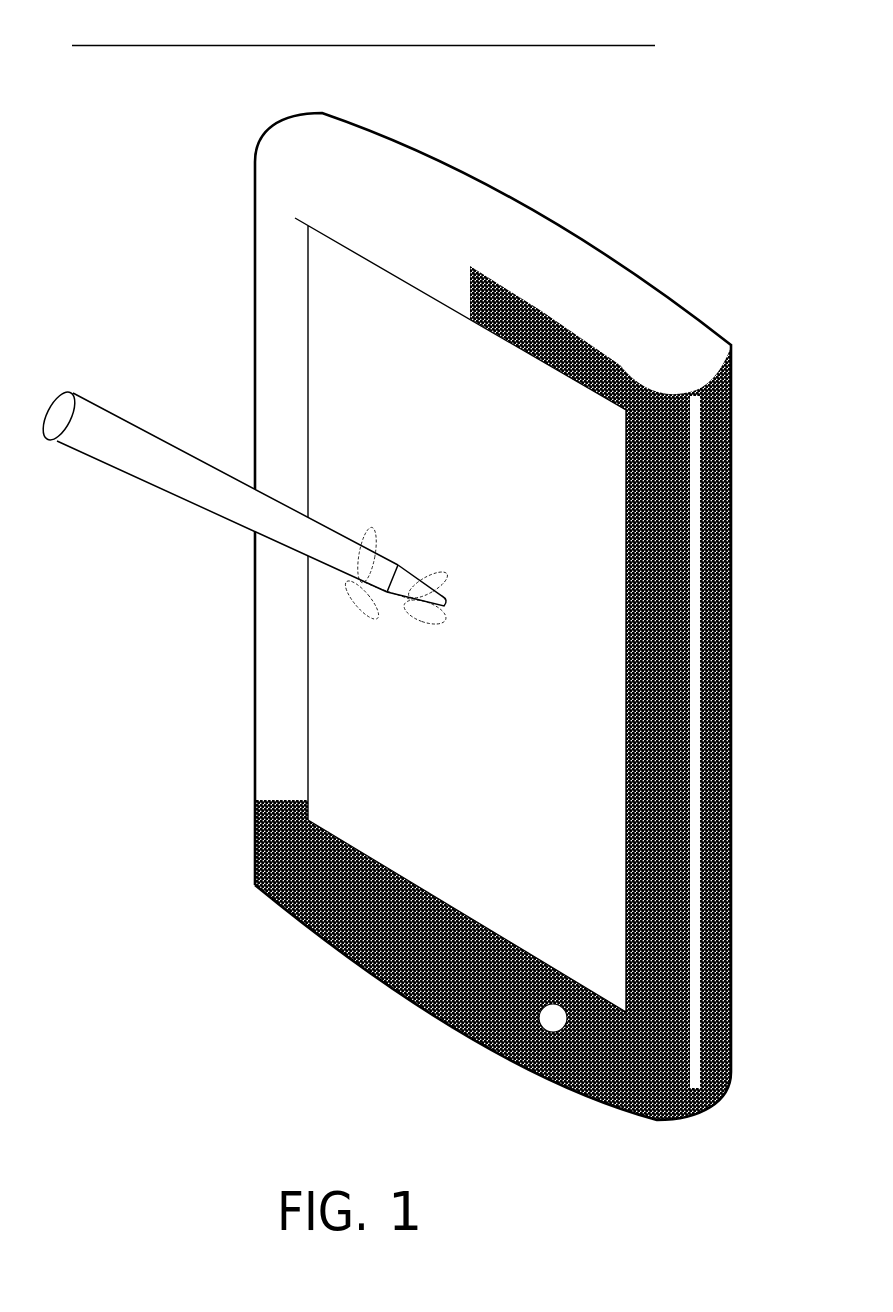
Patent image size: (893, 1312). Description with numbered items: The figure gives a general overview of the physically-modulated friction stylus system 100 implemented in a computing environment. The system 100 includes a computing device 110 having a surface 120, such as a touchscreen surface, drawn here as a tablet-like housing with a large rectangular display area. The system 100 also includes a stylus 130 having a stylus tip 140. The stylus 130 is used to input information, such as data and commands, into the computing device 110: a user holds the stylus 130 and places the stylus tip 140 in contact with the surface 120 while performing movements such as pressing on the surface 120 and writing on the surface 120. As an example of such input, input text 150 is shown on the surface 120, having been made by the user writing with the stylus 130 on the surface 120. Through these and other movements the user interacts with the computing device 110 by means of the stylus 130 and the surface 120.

The physically-modulated friction stylus system 100 is at (710, 46).
The computing device 110 is at (607, 269).
The surface 120 is at (576, 441).
The stylus 130 is at (167, 495).
The stylus tip 140 is at (451, 605).
The input text 150 is at (403, 610).